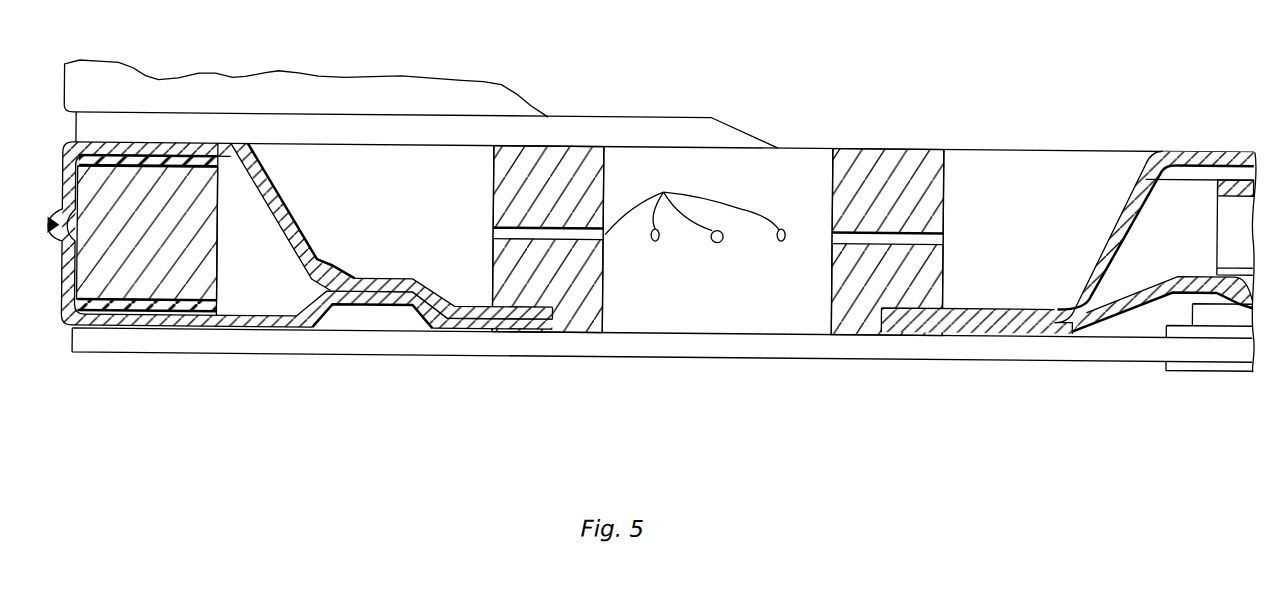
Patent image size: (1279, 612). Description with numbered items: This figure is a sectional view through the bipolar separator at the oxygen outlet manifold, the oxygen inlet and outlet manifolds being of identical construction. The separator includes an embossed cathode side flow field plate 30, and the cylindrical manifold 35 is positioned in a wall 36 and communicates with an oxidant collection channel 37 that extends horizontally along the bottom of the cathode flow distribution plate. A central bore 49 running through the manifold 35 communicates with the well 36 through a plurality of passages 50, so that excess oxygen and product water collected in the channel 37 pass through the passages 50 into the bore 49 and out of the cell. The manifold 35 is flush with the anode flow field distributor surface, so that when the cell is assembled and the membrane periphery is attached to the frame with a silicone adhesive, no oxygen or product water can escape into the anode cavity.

The cathode side flow field plate 30 is at (1195, 147).
The manifold 35 is at (534, 147).
The wall 36 is at (408, 135).
The oxidant collection channel 37 is at (1045, 219).
The central bore 49 is at (733, 162).
The passages 50 is at (663, 192).